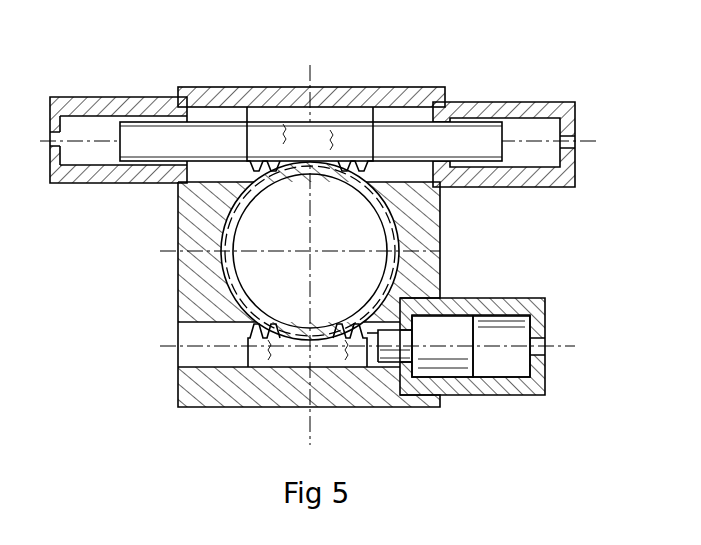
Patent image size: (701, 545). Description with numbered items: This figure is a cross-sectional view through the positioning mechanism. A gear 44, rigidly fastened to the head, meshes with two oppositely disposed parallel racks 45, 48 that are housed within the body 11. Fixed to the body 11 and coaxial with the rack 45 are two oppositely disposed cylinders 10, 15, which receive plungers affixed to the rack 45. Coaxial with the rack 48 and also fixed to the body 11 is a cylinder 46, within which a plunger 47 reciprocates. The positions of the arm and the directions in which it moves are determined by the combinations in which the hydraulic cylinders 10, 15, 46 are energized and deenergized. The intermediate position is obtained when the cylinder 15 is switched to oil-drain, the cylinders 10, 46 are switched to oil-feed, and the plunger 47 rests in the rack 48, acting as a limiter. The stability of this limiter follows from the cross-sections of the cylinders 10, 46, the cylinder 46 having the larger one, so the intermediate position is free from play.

The cylinder 10 is at (531, 100).
The body 11 is at (335, 59).
The cylinder 15 is at (118, 97).
The gear 44 is at (266, 175).
The rack 45 is at (338, 92).
The cylinder 46 is at (481, 383).
The plunger 47 is at (471, 392).
The rack 48 is at (330, 396).